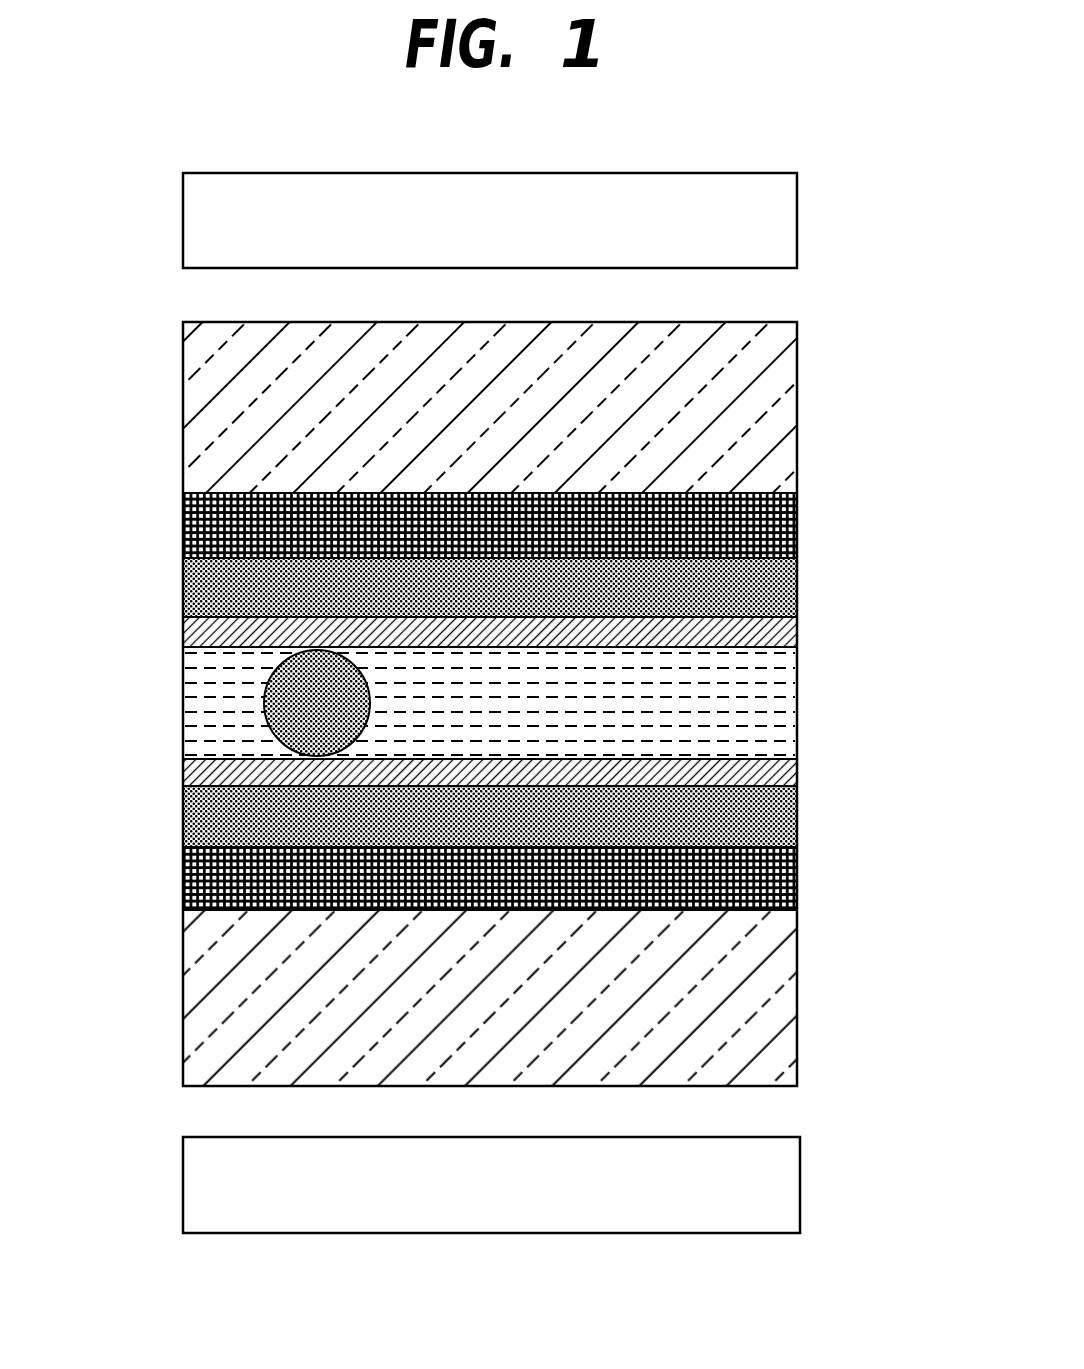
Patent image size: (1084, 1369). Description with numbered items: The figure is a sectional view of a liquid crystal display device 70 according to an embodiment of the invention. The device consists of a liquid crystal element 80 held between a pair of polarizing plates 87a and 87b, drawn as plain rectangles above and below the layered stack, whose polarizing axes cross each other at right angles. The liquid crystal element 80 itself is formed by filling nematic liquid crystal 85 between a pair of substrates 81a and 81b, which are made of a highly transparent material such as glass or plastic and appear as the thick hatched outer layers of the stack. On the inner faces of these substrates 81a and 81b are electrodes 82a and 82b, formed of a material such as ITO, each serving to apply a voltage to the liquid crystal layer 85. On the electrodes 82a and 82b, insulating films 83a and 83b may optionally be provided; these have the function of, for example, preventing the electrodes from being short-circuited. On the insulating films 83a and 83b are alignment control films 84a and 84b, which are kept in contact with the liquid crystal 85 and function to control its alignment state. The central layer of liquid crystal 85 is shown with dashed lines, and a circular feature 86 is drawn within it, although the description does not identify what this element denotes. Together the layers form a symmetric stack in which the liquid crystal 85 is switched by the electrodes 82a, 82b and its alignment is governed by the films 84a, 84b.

The liquid crystal display device 70 is at (832, 126).
The liquid crystal element 80 is at (150, 414).
The substrate 81a is at (797, 393).
The substrate 81b is at (797, 990).
The electrode 82a is at (797, 523).
The electrode 82b is at (797, 883).
The insulating film 83a is at (797, 581).
The insulating film 83b is at (797, 825).
The alignment control film 84a is at (797, 632).
The alignment control film 84b is at (797, 775).
The liquid crystal 85 is at (797, 702).
The particle 86 is at (266, 703).
The polarizing plate 87a is at (797, 212).
The polarizing plate 87b is at (800, 1183).